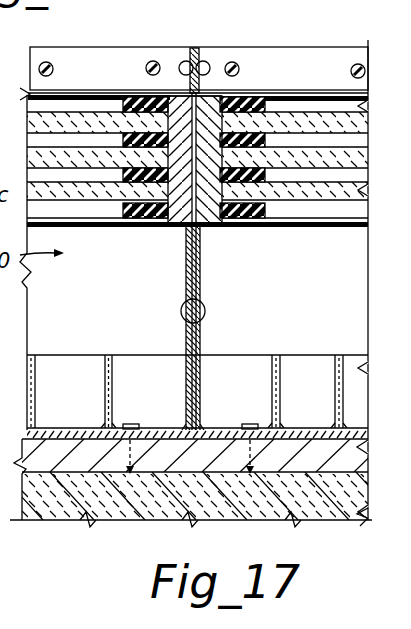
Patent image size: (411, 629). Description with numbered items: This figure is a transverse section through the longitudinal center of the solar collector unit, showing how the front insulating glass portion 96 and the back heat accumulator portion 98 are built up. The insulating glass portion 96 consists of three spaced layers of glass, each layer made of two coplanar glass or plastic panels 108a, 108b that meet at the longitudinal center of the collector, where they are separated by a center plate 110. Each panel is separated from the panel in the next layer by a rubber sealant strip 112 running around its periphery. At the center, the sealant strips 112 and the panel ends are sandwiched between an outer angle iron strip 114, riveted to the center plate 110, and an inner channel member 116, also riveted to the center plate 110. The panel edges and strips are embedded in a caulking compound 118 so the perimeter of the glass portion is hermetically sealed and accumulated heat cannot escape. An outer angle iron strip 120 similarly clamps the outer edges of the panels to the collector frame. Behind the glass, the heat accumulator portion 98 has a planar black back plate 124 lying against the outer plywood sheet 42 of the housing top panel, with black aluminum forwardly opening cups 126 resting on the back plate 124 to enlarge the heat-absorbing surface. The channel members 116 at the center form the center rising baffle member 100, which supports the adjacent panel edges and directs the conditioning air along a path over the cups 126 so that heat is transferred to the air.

The plywood sheet 42 is at (318, 462).
The insulating glass portion 96 is at (290, 62).
The heat accumulator portion 98 is at (236, 338).
The rising baffle member 100 is at (182, 323).
The glass or plastic panel 108a is at (47, 187).
The glass or plastic panel 108b is at (328, 187).
The center plate 110 is at (202, 125).
The rubber sealant strip 112 is at (141, 140).
The outer angle iron strip 114 is at (206, 55).
The inner channel member 116 is at (186, 254).
The caulking compound 118 is at (220, 125).
The outer angle iron strip 120 is at (72, 50).
The back plate 124 is at (47, 458).
The forwardly opening cup 126 is at (137, 368).